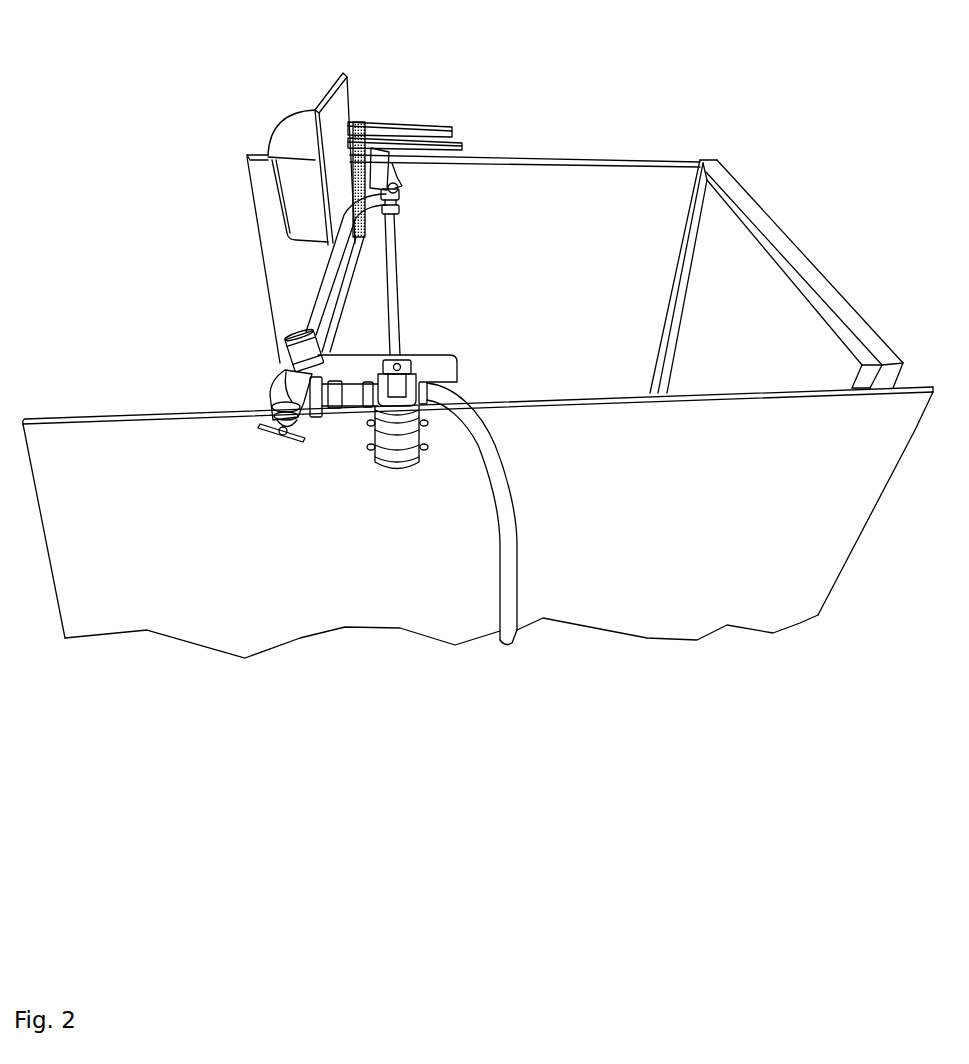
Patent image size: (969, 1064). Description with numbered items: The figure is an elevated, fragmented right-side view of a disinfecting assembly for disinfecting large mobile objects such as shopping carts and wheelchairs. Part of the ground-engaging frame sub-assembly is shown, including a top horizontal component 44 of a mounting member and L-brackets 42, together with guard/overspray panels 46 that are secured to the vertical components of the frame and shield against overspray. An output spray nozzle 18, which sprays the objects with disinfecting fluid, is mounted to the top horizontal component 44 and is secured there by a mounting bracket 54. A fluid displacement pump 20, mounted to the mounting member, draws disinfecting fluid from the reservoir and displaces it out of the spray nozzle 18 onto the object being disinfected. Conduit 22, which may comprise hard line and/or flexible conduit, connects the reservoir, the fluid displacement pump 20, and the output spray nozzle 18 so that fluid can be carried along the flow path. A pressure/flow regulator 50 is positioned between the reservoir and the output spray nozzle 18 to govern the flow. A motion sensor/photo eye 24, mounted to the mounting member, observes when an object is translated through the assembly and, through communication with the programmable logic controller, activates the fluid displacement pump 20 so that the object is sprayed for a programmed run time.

The output spray nozzle 18 is at (399, 213).
The fluid displacement pump 20 is at (399, 450).
The conduit 22 is at (320, 308).
The motion sensor/photo eye 24 is at (303, 135).
The L-brackets 42 is at (430, 147).
The top horizontal component 44 is at (792, 258).
The guard/overspray panel 46 is at (617, 193).
The pressure/flow regulator 50 is at (282, 442).
The mounting bracket 54 is at (358, 122).